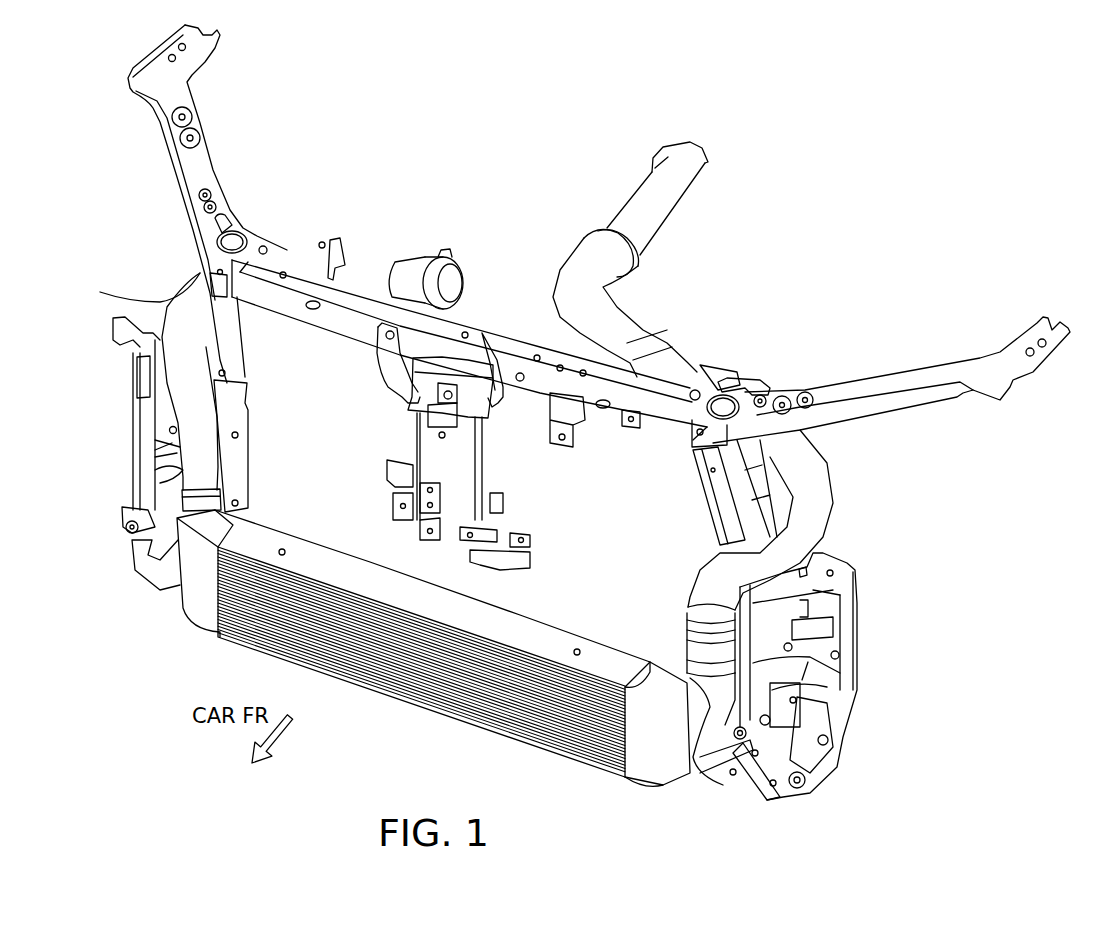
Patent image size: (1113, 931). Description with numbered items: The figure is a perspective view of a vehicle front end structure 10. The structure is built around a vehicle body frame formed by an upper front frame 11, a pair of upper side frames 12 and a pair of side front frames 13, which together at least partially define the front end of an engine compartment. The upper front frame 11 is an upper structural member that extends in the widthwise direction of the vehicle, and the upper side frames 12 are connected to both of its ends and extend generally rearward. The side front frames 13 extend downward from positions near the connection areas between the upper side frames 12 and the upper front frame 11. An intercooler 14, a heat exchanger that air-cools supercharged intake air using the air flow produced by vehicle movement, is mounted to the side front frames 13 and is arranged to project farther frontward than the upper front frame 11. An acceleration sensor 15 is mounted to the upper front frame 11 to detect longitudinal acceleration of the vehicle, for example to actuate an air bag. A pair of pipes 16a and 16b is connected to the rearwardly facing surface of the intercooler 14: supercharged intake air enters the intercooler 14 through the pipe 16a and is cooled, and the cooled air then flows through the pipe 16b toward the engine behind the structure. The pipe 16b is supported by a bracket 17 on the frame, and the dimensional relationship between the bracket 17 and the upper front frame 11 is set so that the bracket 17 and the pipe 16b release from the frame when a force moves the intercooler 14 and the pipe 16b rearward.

The vehicle front end structure 10 is at (1037, 140).
The upper front frame 11 is at (337, 320).
The upper side frames 12 is at (187, 165).
The side front frames 13 is at (237, 397).
The intercooler 14 is at (383, 673).
The acceleration sensor 15 is at (583, 427).
The pipe 16a is at (177, 302).
The pipe 16b is at (822, 498).
The bracket 17 is at (725, 387).